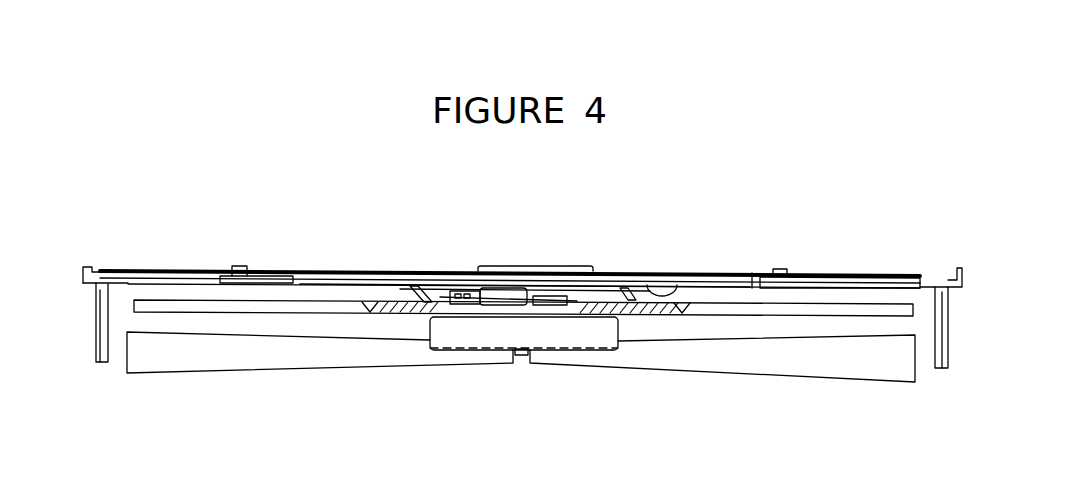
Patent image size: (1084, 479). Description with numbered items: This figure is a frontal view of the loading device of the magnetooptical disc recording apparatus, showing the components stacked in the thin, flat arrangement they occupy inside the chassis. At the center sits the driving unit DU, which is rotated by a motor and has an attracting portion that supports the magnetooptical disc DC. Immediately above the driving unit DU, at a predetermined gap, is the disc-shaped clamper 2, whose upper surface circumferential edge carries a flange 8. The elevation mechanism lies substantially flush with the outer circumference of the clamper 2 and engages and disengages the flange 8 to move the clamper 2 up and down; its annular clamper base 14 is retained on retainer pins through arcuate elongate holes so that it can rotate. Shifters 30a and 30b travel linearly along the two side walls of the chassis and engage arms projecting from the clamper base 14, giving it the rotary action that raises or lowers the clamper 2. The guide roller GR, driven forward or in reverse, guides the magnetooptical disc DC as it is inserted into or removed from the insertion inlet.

The clamper 2 is at (603, 297).
The flange 8 is at (685, 282).
The clamper base 14 is at (732, 272).
The shifter 30a is at (847, 275).
The shifter 30b is at (200, 270).
The guide roller GR is at (282, 363).
The driving unit DU is at (470, 332).
The magnetooptical disc DC is at (732, 308).